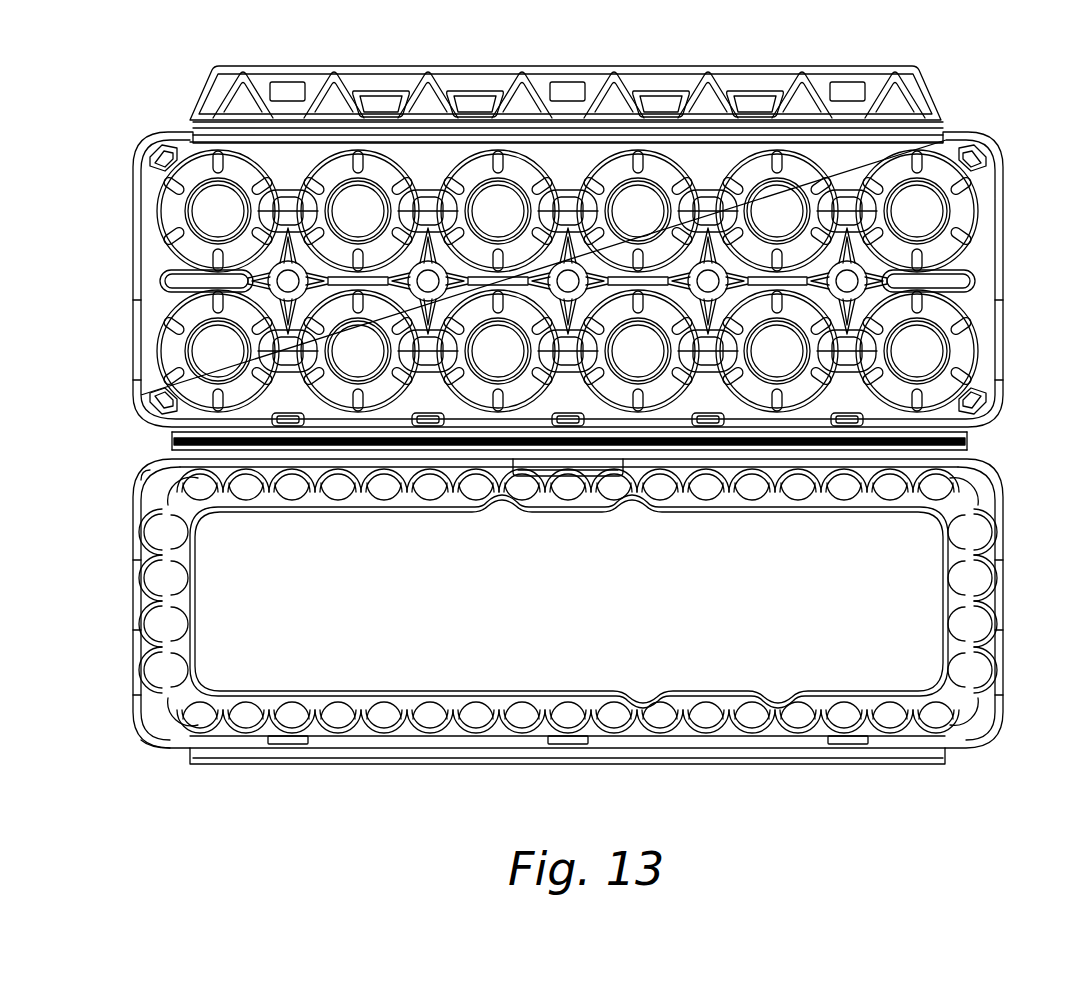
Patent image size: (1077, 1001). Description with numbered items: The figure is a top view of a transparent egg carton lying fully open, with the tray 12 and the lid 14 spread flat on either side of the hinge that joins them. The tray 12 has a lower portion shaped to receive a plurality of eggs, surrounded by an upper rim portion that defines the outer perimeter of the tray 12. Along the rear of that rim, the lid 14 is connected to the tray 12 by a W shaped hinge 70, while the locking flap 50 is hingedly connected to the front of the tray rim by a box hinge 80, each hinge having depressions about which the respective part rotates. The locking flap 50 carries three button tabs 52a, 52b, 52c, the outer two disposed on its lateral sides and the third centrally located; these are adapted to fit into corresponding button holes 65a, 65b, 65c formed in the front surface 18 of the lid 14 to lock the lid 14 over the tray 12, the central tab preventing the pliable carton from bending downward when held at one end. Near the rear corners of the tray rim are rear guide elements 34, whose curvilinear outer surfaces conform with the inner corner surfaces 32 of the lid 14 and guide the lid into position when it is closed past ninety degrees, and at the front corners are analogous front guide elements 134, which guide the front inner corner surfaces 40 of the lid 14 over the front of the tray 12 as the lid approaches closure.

The tray 12 is at (567, 234).
The lid 14 is at (578, 630).
The front surface 18 is at (797, 761).
The inner corner surface 32 is at (157, 482).
The rear guide element 34 is at (145, 406).
The inner corner surface 40 is at (165, 728).
The locking flap 50 is at (565, 68).
The button tab 52a is at (287, 88).
The button tab 52b is at (567, 88).
The button tab 52c is at (847, 88).
The button hole 65a is at (287, 745).
The button hole 65b is at (567, 745).
The button hole 65c is at (847, 745).
The W shaped hinge 70 is at (162, 441).
The box hinge 80 is at (192, 138).
The front guide element 134 is at (160, 152).